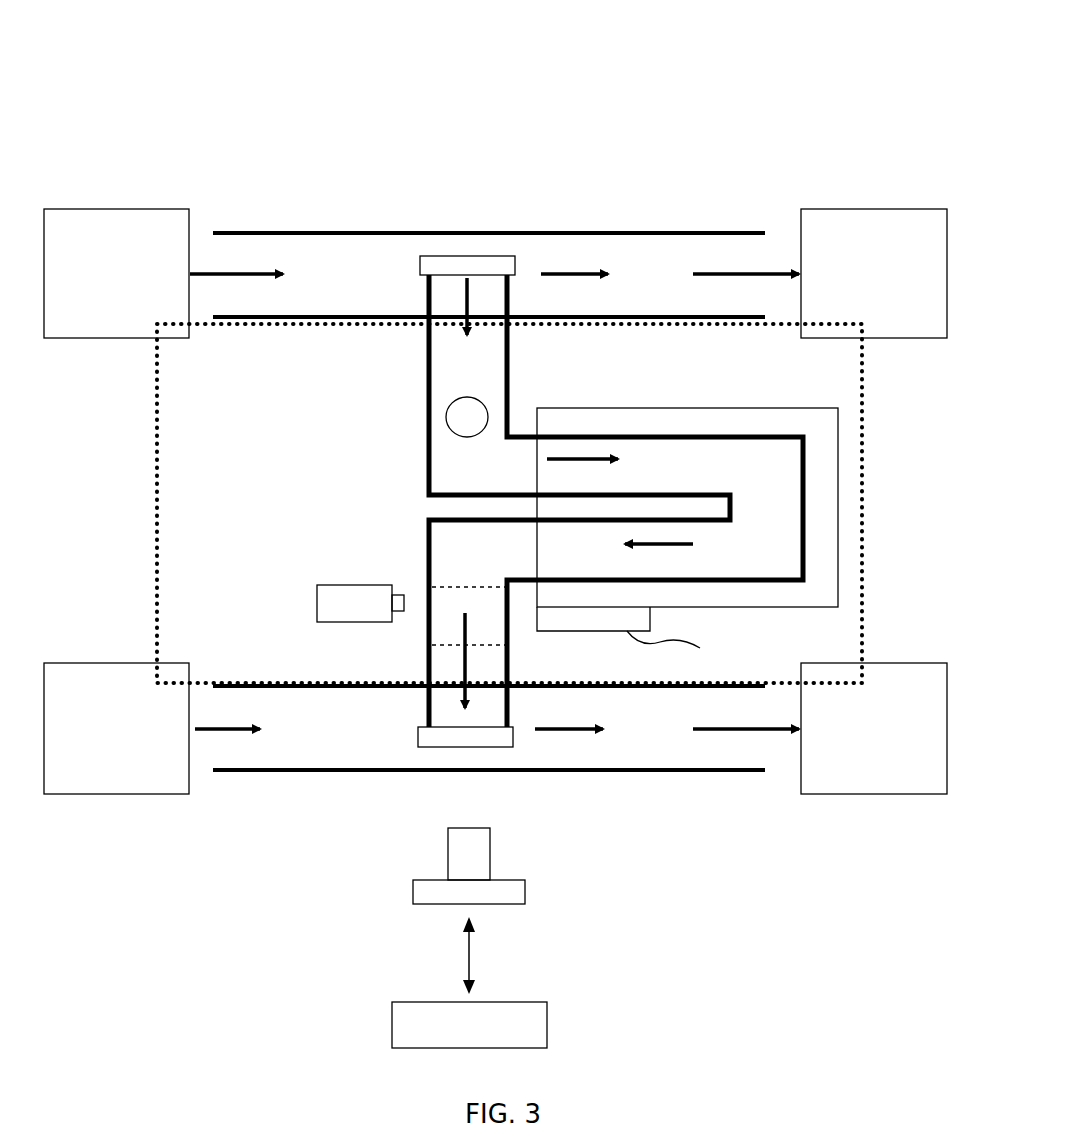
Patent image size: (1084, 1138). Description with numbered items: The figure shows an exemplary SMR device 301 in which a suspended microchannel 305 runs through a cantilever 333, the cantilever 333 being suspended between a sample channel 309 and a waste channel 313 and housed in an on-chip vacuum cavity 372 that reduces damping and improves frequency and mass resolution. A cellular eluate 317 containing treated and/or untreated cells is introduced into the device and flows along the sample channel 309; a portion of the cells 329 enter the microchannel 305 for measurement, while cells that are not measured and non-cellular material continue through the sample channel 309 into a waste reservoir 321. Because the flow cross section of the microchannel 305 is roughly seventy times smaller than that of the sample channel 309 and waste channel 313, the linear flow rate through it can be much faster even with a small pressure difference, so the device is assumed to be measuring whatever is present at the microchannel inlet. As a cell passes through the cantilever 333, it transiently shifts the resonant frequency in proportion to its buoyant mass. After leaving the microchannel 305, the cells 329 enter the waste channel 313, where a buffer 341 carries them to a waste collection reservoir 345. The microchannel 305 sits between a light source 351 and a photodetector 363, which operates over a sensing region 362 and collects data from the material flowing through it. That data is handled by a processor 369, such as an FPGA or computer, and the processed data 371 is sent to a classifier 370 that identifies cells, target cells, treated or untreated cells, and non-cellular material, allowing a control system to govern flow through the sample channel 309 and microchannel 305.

The SMR device 301 is at (475, 62).
The microchannel 305 is at (428, 362).
The sample channel 309 is at (376, 232).
The waste channel 313 is at (353, 772).
The cellular eluate 317 is at (116, 273).
The waste reservoir 321 is at (874, 273).
The cells 329 is at (446, 414).
The cantilever 333 is at (838, 500).
The buffer 341 is at (116, 728).
The waste collection reservoir 345 is at (874, 728).
The light source 351 is at (316, 588).
The sensing region 362 is at (429, 585).
The photodetector 363 is at (490, 854).
The processor 369 is at (513, 878).
The classifier 370 is at (548, 1024).
The processed data 371 is at (483, 950).
The on-chip vacuum cavity 372 is at (863, 375).